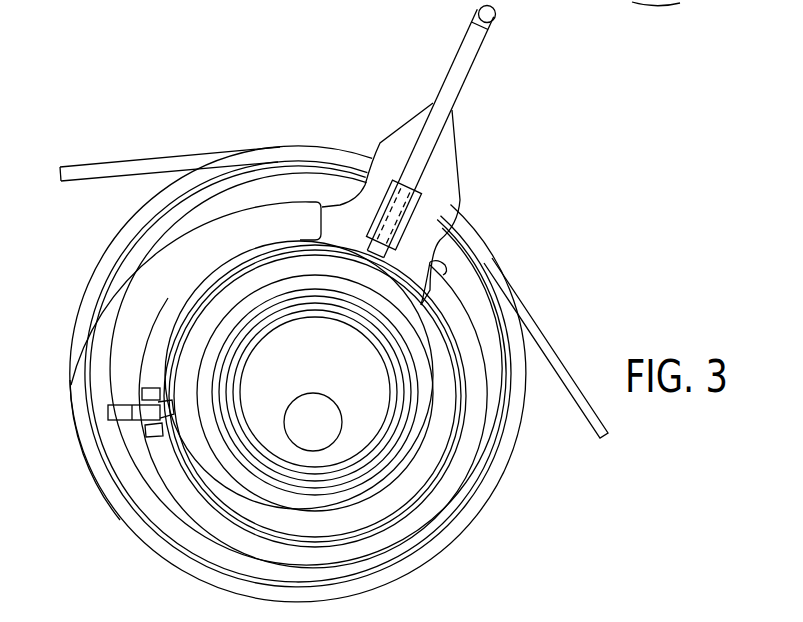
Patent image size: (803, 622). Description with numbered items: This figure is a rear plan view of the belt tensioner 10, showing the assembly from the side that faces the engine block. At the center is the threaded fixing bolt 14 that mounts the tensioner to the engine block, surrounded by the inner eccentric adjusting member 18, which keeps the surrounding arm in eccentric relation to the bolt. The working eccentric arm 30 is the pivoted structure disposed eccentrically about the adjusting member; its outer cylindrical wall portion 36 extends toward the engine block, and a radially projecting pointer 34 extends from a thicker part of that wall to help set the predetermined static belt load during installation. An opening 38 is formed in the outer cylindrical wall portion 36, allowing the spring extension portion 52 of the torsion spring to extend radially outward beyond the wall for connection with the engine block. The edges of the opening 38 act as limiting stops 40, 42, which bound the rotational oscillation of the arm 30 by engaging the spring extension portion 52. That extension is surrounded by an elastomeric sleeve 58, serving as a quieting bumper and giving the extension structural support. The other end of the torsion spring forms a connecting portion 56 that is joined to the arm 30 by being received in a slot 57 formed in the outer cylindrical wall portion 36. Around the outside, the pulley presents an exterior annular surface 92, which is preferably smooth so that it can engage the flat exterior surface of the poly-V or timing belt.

The belt tensioner 10 is at (231, 131).
The threaded fixing bolt 14 is at (303, 412).
The inner eccentric adjusting member 18 is at (372, 417).
The working eccentric arm 30 is at (163, 317).
The pointer 34 is at (448, 173).
The outer cylindrical wall portion 36 is at (183, 277).
The opening 38 is at (428, 259).
The limiting stop 40 is at (450, 267).
The limiting stop 42 is at (343, 200).
The spring extension portion 52 is at (463, 77).
The connecting portion 56 is at (137, 412).
The slot 57 is at (145, 392).
The elastomeric sleeve 58 is at (388, 193).
The exterior annular surface 92 is at (130, 530).